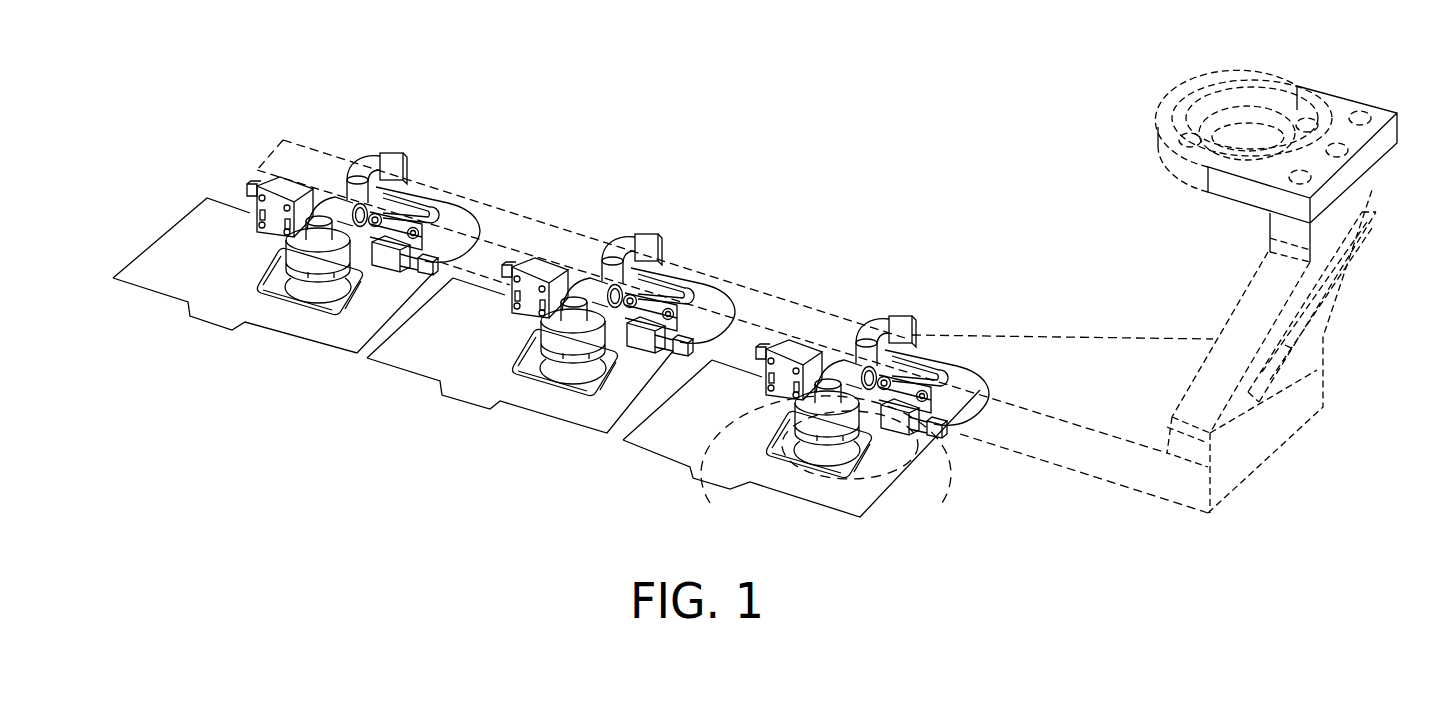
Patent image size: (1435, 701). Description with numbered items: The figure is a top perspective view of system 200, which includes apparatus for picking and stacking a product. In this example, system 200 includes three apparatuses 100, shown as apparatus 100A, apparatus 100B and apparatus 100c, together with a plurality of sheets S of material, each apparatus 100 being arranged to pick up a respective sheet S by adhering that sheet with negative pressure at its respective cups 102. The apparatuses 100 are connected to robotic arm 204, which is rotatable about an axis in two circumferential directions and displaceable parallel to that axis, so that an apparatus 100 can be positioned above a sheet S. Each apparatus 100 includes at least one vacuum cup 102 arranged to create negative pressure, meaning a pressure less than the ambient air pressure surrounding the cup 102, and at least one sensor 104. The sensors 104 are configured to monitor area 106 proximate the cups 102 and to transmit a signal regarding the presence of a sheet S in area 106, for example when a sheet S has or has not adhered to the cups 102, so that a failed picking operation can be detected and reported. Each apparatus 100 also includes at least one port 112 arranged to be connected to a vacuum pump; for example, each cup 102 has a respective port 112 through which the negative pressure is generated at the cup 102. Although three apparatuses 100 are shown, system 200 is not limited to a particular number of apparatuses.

The system 200 is at (786, 60).
The robotic arm 204 is at (753, 288).
The sheet S is at (133, 288).
The apparatus 100 is at (267, 308).
The apparatus 100A is at (821, 428).
The apparatus 100B is at (546, 347).
The apparatus 100c is at (293, 268).
The vacuum cup 102 is at (318, 291).
The sensor 104 is at (275, 228).
The area 106 is at (826, 463).
The port 112 is at (341, 210).